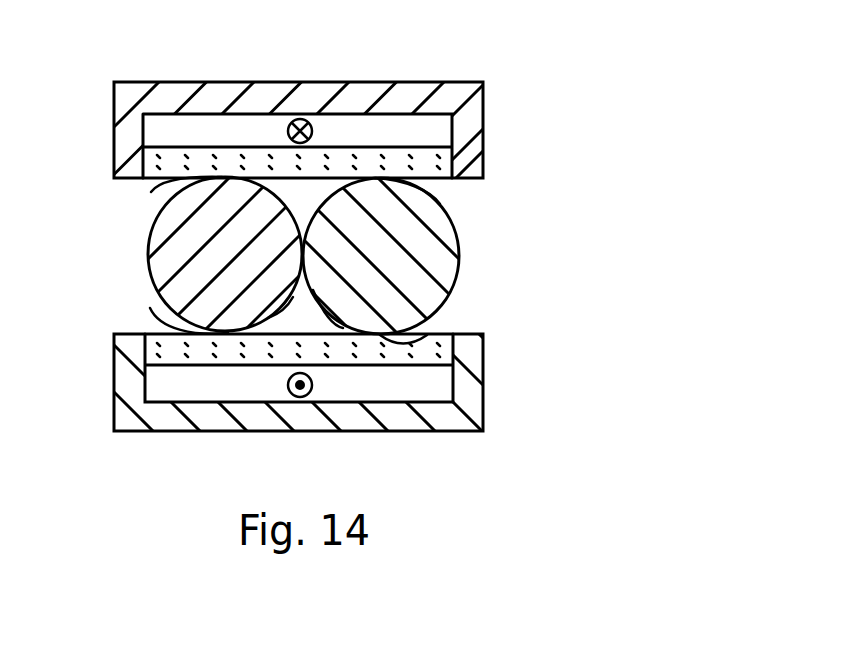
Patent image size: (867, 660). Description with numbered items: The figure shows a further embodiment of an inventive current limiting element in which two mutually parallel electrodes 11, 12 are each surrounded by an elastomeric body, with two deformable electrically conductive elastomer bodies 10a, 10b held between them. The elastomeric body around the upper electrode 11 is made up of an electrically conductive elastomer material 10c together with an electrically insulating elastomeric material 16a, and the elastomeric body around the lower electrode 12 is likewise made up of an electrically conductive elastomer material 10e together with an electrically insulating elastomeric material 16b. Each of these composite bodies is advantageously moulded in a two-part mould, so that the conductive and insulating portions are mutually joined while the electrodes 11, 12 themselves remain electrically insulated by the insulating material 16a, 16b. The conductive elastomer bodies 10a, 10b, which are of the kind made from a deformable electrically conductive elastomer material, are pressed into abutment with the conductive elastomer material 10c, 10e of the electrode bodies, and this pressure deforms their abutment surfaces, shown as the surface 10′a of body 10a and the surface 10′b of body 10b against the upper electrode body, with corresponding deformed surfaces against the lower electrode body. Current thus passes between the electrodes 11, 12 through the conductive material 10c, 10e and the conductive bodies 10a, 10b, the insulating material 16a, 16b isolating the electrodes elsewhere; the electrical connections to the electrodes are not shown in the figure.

The electrode 11 is at (318, 106).
The electrode 12 is at (316, 408).
The electrically insulating elastomeric material 16a is at (308, 95).
The electrically insulating elastomeric material 16b is at (303, 423).
The electrically conductive elastomer material 10c is at (403, 138).
The electrically conductive elastomer material 10e is at (433, 388).
The body 10a is at (210, 256).
The body 10b is at (399, 261).
The abutment surface 10′a is at (158, 189).
The abutment surface 10′b is at (440, 204).